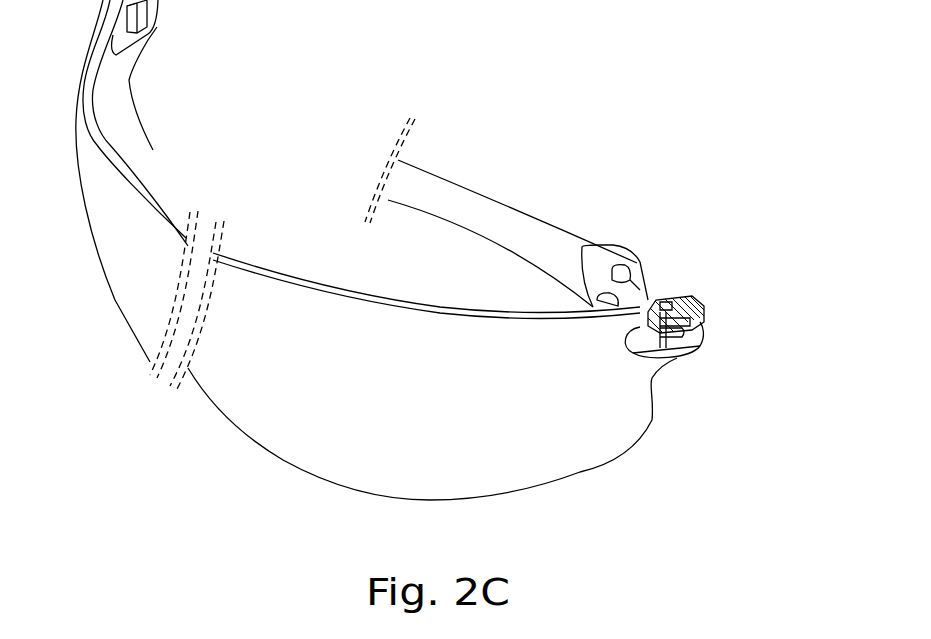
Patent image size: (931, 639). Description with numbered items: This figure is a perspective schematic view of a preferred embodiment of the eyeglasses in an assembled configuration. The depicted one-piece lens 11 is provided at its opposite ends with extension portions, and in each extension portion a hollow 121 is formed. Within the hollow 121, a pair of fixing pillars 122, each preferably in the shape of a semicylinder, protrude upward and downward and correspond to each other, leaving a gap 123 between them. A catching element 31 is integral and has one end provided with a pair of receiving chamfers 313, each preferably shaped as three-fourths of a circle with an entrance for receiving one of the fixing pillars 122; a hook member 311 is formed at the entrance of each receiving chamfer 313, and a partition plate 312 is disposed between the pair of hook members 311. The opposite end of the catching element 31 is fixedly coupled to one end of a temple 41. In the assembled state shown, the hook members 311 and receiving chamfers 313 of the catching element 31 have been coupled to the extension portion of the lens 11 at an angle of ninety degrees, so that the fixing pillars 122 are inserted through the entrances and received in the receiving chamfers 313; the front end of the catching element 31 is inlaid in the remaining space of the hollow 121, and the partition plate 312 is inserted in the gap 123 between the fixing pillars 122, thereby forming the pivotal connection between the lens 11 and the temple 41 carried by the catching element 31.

The lens 11 is at (585, 450).
The hollow 121 is at (632, 347).
The fixing pillar 122 is at (673, 313).
The gap 123 is at (143, 15).
The catching element 31 is at (640, 268).
The hook member 311 is at (673, 323).
The partition plate 312 is at (678, 337).
The receiving chamfer 313 is at (668, 307).
The temple 41 is at (535, 260).